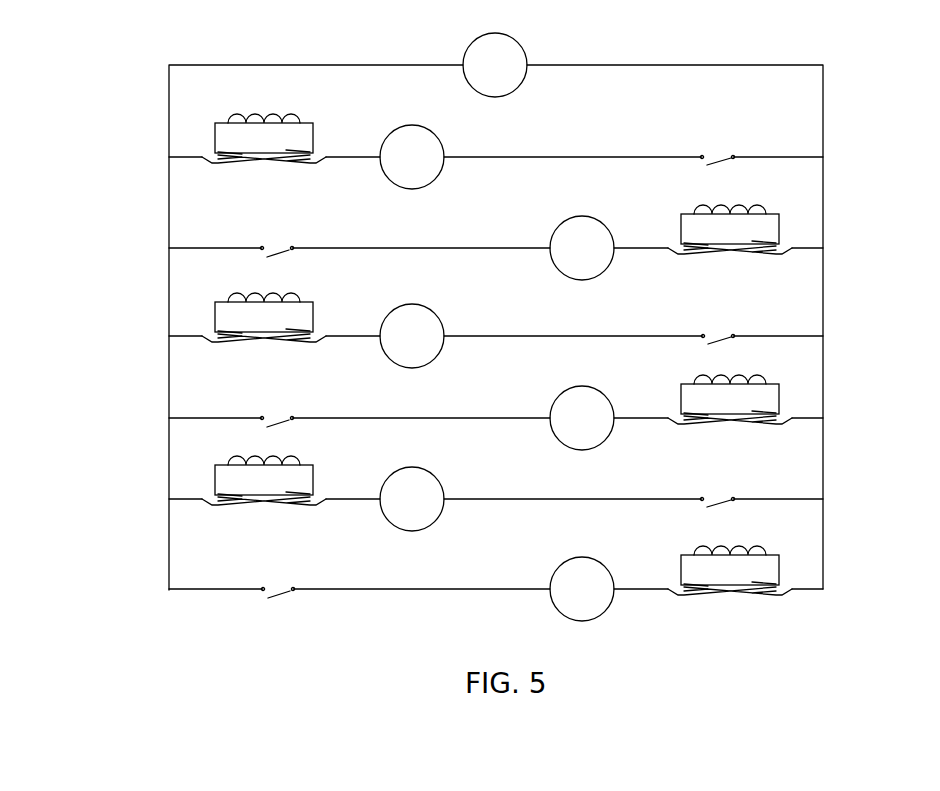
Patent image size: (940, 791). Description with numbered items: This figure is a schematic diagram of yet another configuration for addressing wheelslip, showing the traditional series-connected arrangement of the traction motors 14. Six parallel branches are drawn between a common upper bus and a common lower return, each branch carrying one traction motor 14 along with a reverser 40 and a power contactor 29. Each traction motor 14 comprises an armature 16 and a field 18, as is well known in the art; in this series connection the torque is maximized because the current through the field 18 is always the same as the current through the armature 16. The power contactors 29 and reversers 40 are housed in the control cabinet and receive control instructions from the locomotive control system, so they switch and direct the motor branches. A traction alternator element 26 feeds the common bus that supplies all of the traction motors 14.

The traction motor 14 is at (342, 115).
The armature 16 is at (432, 132).
The field 18 is at (250, 132).
The main timer 26 is at (516, 40).
The power contactor 29 is at (268, 236).
The reverser 40 is at (262, 160).